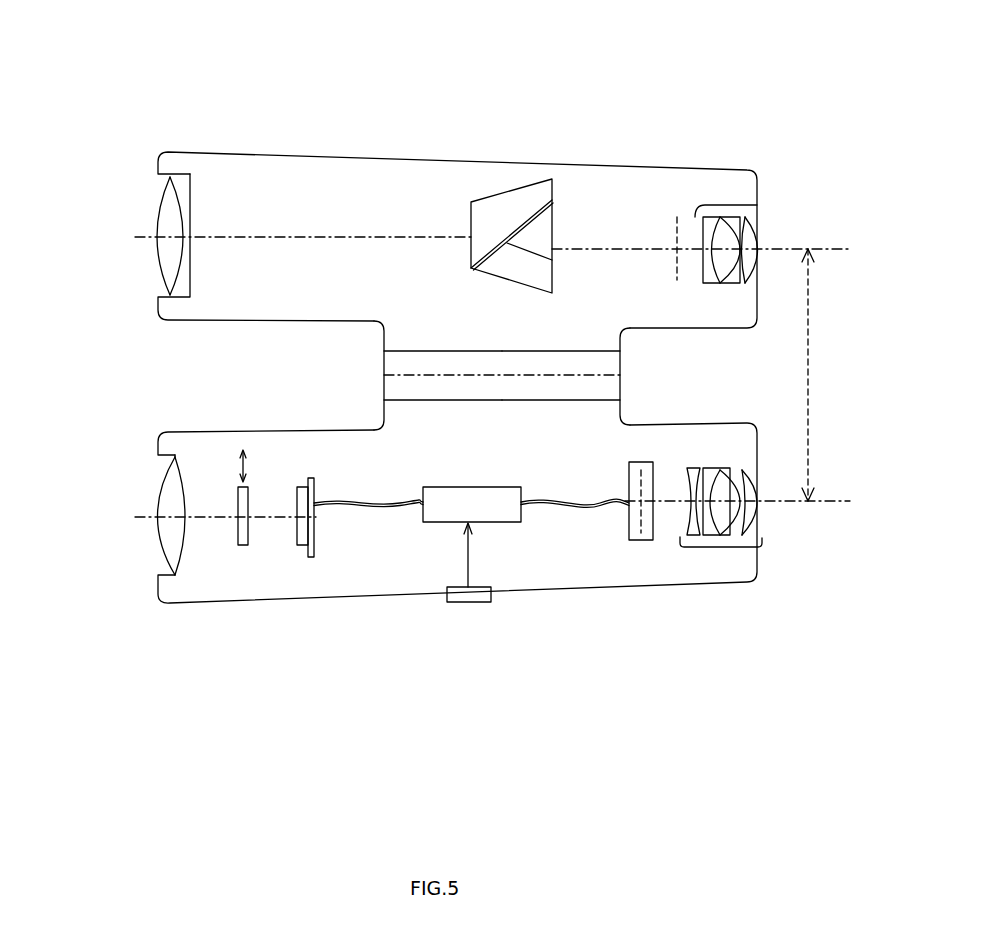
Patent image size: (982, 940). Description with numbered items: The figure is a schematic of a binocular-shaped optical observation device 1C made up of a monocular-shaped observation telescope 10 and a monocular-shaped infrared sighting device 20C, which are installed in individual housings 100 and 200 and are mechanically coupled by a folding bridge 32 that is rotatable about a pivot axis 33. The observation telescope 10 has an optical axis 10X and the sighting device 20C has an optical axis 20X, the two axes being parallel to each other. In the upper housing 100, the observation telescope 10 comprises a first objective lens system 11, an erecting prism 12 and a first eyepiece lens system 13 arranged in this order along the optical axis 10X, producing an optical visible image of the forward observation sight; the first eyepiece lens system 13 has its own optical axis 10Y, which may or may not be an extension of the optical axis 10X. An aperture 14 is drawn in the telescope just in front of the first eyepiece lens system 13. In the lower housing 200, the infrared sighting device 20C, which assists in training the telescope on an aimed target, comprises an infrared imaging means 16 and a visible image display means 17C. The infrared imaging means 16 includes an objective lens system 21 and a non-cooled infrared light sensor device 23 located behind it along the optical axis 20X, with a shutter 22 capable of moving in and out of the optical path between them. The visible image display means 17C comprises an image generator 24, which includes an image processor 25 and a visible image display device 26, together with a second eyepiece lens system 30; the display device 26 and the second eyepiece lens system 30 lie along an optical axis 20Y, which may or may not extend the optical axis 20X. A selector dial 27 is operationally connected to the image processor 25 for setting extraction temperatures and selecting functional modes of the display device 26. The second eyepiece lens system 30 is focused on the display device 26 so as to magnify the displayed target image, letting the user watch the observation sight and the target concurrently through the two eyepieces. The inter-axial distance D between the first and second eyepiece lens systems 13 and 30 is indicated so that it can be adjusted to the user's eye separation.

The optical observation device 1C is at (447, 83).
The observation telescope 10 is at (213, 135).
The housing 100 is at (318, 157).
The first objective lens system 11 is at (165, 192).
The optical axis 10X is at (143, 237).
The erecting prism 12 is at (525, 185).
The aperture 14 is at (677, 217).
The first eyepiece lens system 13 is at (727, 205).
The optical axis 10Y is at (780, 249).
The pivot axis 33 is at (397, 375).
The folding bridge 32 is at (605, 364).
The inter-axial distance D is at (819, 375).
The infrared sighting device 20C is at (695, 755).
The housing 200 is at (387, 588).
The optical axis 20X is at (143, 517).
The optical axis 20Y is at (780, 502).
The infrared imaging means 16 is at (167, 646).
The objective lens system 21 is at (175, 575).
The shutter 22 is at (247, 545).
The non-cooled infrared light sensor device 23 is at (310, 557).
The image generator 24 is at (687, 646).
The selector dial 27 is at (491, 601).
The image processor 25 is at (513, 523).
The visible image display device 26 is at (650, 540).
The visible image display means 17C is at (775, 700).
The second eyepiece lens system 30 is at (722, 548).